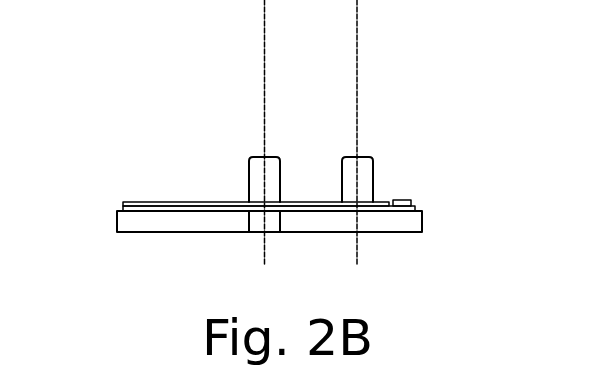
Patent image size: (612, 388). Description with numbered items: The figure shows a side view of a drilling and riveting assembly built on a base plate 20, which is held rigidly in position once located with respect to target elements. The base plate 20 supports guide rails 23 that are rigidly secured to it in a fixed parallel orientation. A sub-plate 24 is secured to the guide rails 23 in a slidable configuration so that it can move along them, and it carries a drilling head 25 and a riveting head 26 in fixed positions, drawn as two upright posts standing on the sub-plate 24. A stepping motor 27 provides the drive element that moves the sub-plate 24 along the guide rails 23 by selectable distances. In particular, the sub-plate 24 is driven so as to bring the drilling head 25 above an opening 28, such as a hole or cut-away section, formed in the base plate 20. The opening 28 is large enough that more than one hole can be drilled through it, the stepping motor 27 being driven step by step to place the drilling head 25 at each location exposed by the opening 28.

The base plate 20 is at (150, 222).
The guide rails 23 is at (392, 210).
The sub-plate 24 is at (228, 202).
The drilling head 25 is at (268, 167).
The riveting head 26 is at (352, 167).
The stepping motor 27 is at (410, 202).
The opening 28 is at (272, 230).